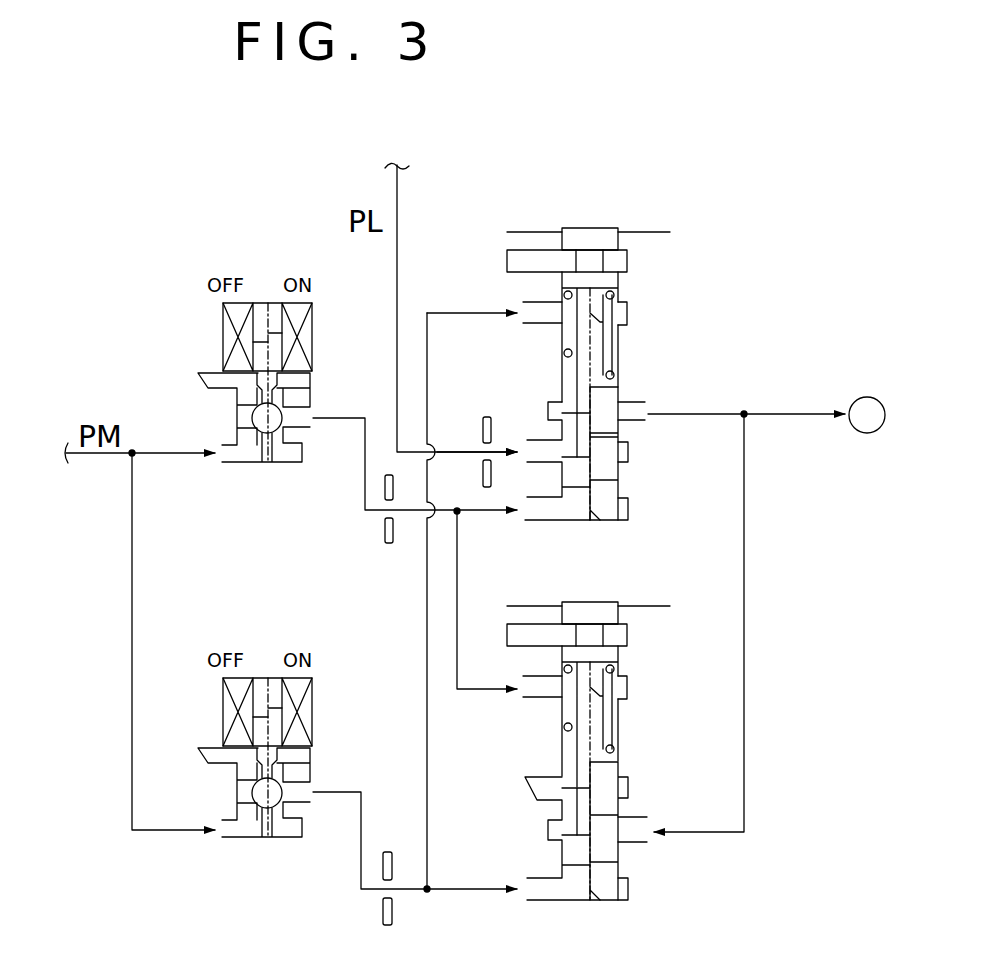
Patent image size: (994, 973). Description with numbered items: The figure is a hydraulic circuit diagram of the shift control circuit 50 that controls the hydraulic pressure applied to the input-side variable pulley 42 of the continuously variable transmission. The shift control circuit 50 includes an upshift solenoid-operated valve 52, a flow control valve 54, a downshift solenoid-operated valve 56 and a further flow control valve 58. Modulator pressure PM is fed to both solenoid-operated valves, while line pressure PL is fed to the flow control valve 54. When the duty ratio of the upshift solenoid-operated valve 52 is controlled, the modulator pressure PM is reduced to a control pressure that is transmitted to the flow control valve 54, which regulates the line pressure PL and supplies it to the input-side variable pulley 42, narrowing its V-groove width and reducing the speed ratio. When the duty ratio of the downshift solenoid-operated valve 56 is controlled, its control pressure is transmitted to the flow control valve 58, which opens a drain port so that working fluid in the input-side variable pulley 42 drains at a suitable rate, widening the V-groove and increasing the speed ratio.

The input-side variable pulley 42 is at (867, 407).
The shift control circuit 50 is at (595, 339).
The upshift solenoid-operated valve 52 is at (181, 333).
The flow control valve 54 is at (484, 256).
The downshift solenoid-operated valve 56 is at (337, 713).
The flow control valve 58 is at (675, 640).